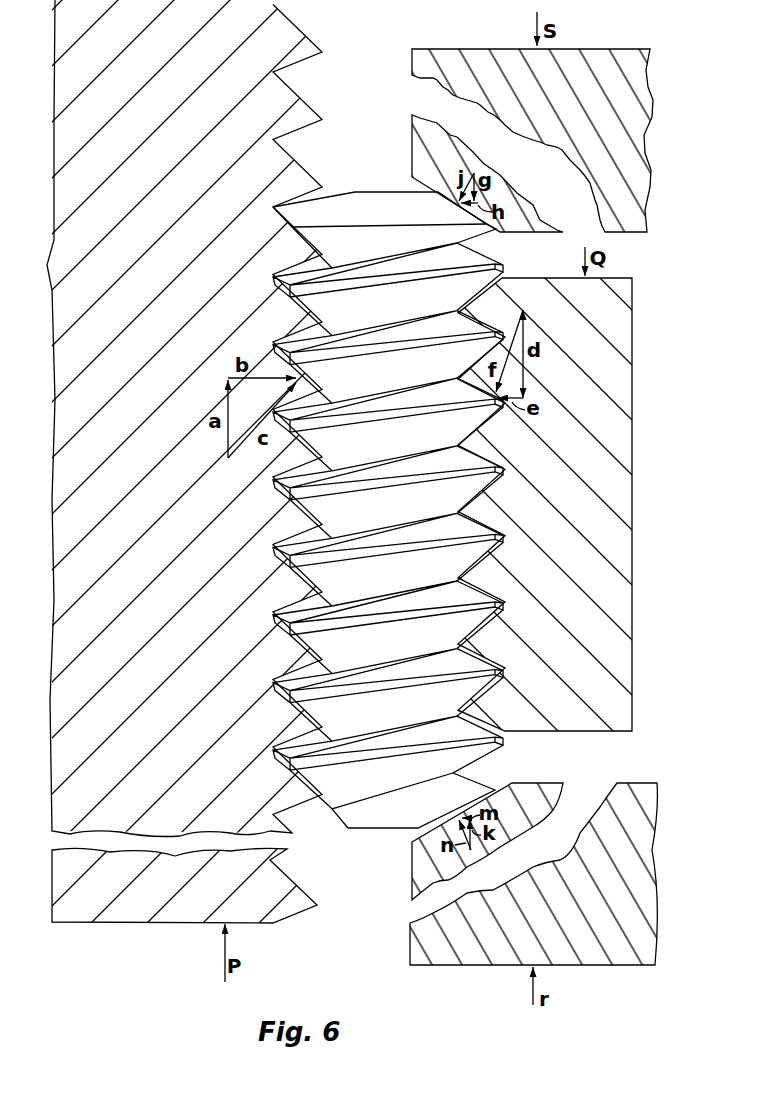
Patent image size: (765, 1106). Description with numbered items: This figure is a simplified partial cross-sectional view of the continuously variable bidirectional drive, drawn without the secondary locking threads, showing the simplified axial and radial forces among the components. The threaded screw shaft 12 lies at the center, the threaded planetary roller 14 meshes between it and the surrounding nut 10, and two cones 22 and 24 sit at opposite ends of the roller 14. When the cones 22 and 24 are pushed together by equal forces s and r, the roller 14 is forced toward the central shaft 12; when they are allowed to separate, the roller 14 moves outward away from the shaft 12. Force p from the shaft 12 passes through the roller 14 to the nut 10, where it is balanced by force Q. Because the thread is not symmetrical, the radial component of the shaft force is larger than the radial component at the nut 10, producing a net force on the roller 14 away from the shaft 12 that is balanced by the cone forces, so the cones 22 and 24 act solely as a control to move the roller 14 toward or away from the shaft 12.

The nut 10 is at (612, 483).
The screw shaft 12 is at (290, 180).
The planetary roller 14 is at (472, 287).
The cone 22 is at (632, 805).
The cone 24 is at (620, 55).